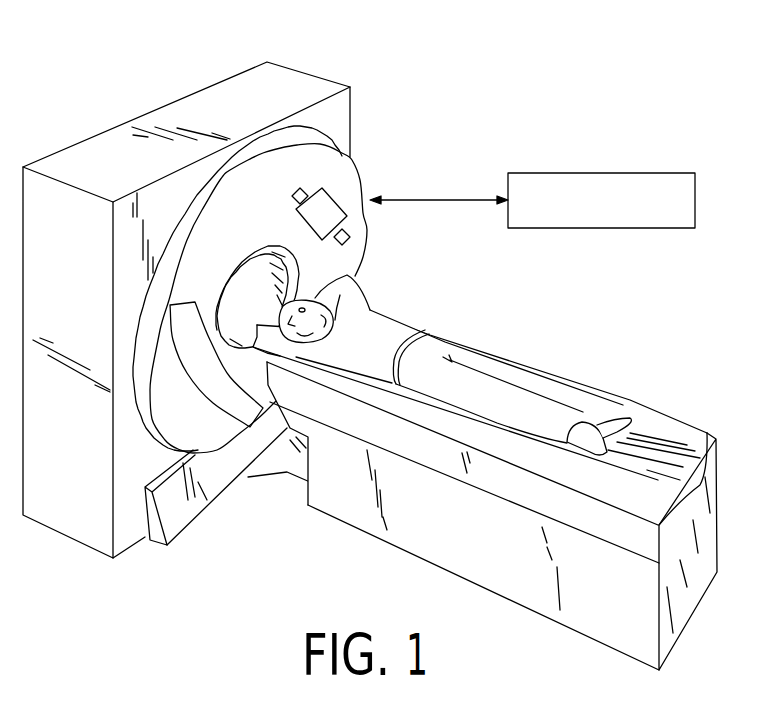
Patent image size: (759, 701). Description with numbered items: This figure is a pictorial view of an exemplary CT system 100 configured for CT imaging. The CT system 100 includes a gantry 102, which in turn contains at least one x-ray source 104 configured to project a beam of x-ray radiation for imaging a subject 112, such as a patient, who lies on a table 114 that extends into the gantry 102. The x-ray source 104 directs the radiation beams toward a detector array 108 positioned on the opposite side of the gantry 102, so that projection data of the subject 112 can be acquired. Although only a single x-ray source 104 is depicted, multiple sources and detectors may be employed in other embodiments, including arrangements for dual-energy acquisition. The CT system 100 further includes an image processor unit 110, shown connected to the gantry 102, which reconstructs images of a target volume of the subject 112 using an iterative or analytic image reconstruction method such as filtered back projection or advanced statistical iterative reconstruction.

The CT system 100 is at (636, 50).
The gantry 102 is at (296, 82).
The x-ray source 104 is at (337, 218).
The detector array 108 is at (237, 410).
The image processor unit 110 is at (653, 173).
The subject 112 is at (380, 328).
The table 114 is at (672, 433).